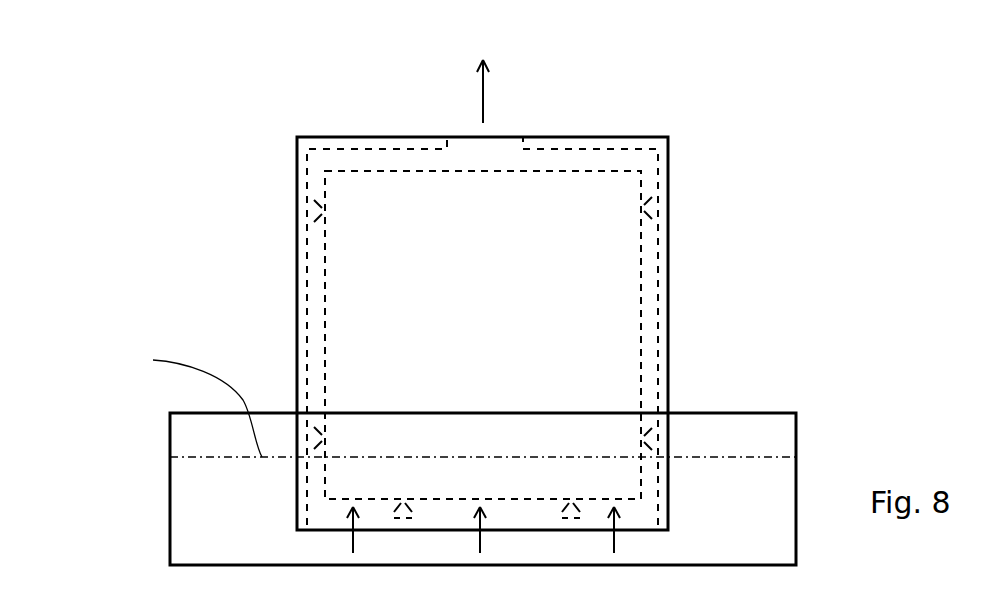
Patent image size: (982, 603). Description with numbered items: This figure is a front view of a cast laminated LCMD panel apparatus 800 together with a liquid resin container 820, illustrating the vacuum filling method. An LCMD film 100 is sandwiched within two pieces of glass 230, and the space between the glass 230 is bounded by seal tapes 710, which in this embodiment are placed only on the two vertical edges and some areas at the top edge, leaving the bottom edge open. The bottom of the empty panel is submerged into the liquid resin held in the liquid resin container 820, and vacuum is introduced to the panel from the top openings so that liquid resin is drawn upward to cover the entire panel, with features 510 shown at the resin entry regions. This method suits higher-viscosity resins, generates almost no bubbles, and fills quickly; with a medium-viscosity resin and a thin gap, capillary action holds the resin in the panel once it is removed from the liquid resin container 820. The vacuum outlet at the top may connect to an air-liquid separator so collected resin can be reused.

The LCMD film 100 is at (643, 297).
The glass 230 is at (670, 360).
The spray nozzles 510 is at (307, 212).
The seal tape 710 is at (307, 170).
The resin removal system 800 is at (812, 100).
The liquid resin container 820 is at (170, 492).